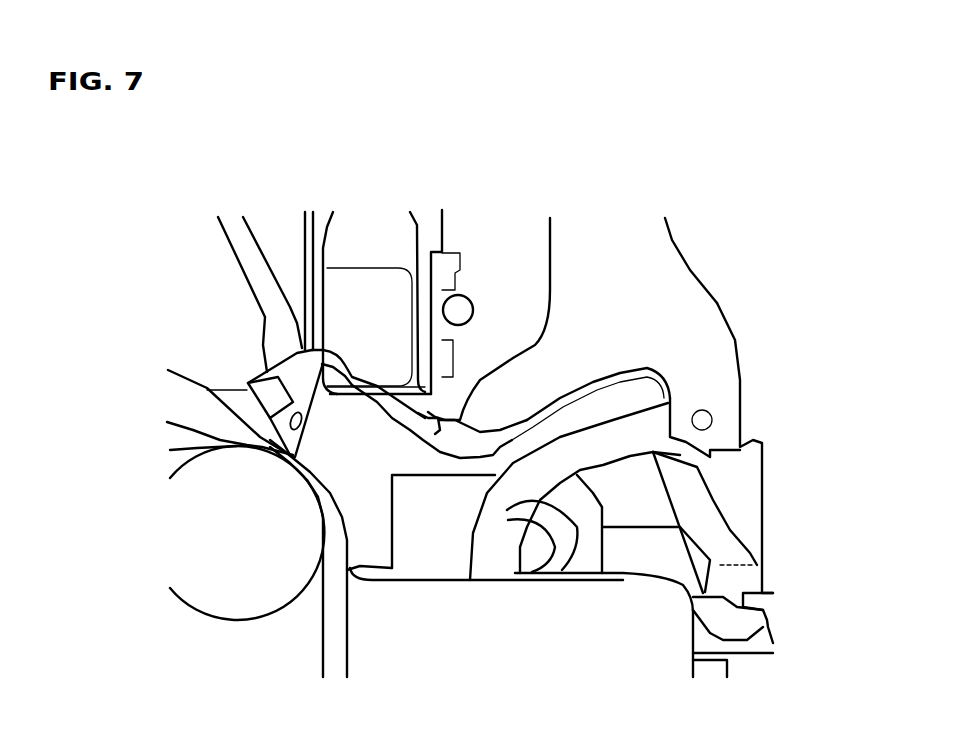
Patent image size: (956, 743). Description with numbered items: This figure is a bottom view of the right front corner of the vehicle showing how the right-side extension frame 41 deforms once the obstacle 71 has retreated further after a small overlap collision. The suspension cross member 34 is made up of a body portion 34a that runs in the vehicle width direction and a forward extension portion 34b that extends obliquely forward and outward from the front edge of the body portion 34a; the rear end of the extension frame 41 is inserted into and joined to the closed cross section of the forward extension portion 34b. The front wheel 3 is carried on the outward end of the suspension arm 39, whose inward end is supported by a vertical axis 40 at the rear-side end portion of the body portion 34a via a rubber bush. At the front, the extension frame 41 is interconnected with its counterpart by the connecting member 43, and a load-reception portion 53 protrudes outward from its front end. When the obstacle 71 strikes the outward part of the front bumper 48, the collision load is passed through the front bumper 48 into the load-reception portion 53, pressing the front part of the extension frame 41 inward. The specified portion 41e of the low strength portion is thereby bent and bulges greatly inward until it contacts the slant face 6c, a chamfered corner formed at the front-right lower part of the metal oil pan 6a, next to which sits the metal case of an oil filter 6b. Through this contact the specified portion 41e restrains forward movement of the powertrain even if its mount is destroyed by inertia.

The front wheel 3 is at (458, 650).
The oil pan 6a is at (370, 233).
The metal case of an oil filter 6b is at (475, 300).
The slant face 6c is at (340, 403).
The suspension cross member 34 is at (722, 300).
The body portion 34a is at (667, 262).
The forward extension portion 34b is at (513, 387).
The suspension arm 39 is at (615, 432).
The axis 40 is at (702, 420).
The extension frame 41 is at (382, 400).
The specified portion 41e is at (330, 360).
The connecting member 43 is at (250, 275).
The front bumper 48 is at (193, 417).
The load-reception portion 53 is at (307, 450).
The obstacle 71 is at (238, 603).